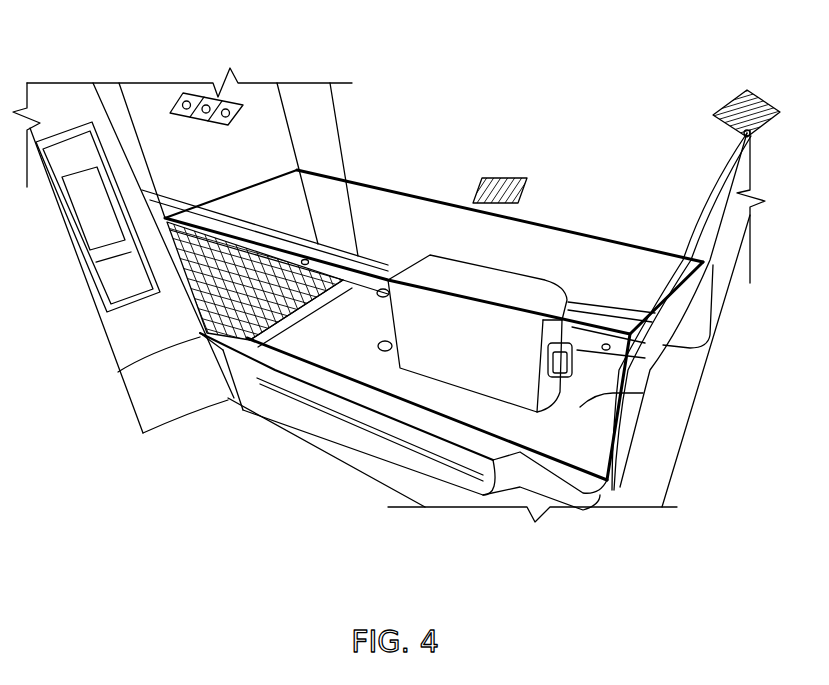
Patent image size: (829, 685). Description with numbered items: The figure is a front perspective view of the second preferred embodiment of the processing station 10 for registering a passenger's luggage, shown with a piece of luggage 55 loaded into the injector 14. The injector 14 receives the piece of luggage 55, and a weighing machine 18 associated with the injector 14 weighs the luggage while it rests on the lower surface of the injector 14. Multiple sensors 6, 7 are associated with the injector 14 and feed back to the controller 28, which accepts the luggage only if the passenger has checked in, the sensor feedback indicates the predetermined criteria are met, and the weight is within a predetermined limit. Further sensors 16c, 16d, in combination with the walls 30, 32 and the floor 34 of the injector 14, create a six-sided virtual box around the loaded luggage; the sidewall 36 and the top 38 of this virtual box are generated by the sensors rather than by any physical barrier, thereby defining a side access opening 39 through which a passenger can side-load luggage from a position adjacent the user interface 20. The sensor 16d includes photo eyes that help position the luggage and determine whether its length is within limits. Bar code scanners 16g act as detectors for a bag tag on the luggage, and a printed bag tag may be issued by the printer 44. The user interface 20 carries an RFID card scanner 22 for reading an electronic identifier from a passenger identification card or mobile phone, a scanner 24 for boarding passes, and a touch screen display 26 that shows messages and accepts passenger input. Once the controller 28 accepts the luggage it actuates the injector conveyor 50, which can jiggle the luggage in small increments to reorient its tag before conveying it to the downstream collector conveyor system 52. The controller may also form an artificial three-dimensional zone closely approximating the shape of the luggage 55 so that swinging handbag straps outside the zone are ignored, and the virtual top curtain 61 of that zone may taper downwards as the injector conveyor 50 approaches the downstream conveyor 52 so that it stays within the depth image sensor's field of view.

The sensor 6 is at (752, 90).
The sensor 7 is at (205, 93).
The processing station 10 is at (735, 230).
The injector 14 is at (643, 393).
The sensor 16c is at (612, 351).
The sensor 16d is at (380, 253).
The bar code scanner 16g is at (523, 175).
The weighing machine 18 is at (543, 493).
The user interface 20 is at (118, 343).
The RFID card scanner 22 is at (128, 283).
The scanner 24 is at (117, 263).
The touch screen display 26 is at (83, 187).
The controller 28 is at (170, 340).
The wall 30 is at (600, 248).
The wall 32 is at (683, 302).
The floor 34 is at (593, 438).
The sidewall 36 is at (393, 393).
The top 38 is at (643, 262).
The side access opening 39 is at (468, 405).
The printer 44 is at (127, 243).
The injector conveyor 50 is at (347, 370).
The collector conveyor system 52 is at (243, 407).
The piece of luggage 55 is at (527, 293).
The virtual top curtain 61 is at (665, 283).